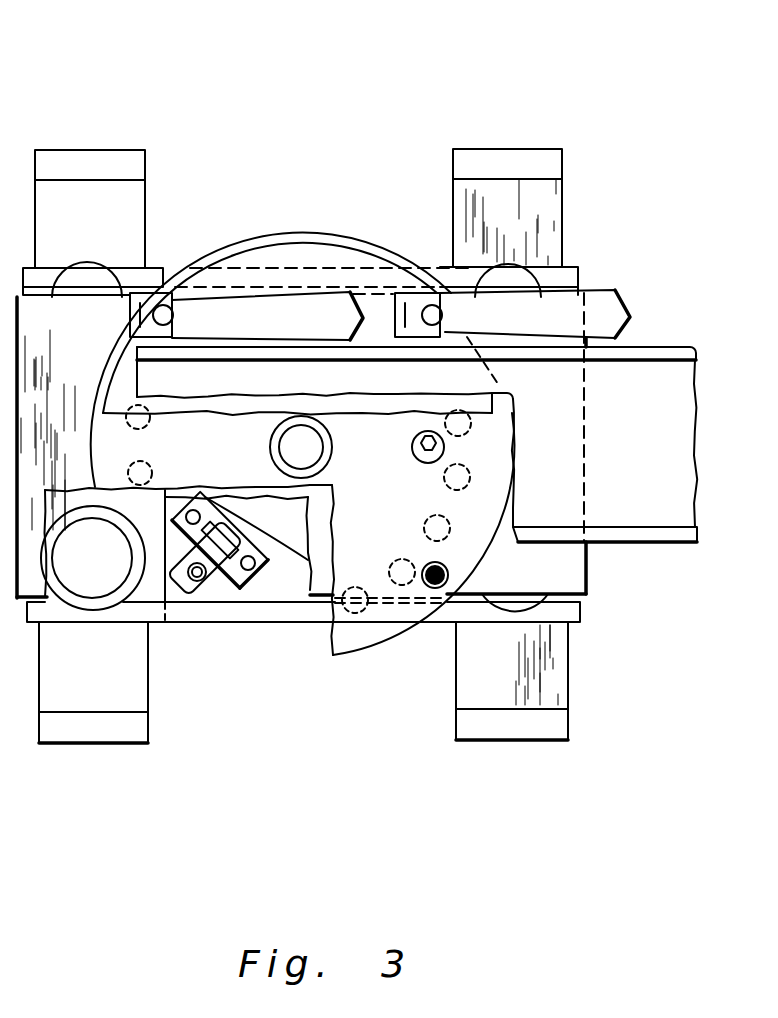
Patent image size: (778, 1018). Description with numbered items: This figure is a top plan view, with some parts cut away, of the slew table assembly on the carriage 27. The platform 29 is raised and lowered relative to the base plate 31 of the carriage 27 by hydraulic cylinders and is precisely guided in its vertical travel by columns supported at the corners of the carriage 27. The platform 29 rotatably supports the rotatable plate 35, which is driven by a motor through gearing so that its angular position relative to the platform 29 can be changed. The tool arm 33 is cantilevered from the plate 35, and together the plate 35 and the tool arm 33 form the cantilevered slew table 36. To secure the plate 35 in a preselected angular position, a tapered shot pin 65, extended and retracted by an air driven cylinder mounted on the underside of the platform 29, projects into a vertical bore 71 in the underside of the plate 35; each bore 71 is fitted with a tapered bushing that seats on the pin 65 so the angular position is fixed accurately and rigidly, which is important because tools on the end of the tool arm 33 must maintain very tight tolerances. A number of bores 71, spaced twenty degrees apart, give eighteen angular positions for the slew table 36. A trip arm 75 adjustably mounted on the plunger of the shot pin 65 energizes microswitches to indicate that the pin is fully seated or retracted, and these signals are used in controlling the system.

The carriage 27 is at (204, 766).
The platform 29 is at (587, 578).
The base plate 31 is at (583, 612).
The tool arm 33 is at (642, 343).
The rotatable plate 35 is at (353, 655).
The cantilevered slew table 36 is at (345, 228).
The tapered shot pin 65 is at (203, 580).
The vertical bore 71 is at (403, 560).
The trip arm 75 is at (222, 542).